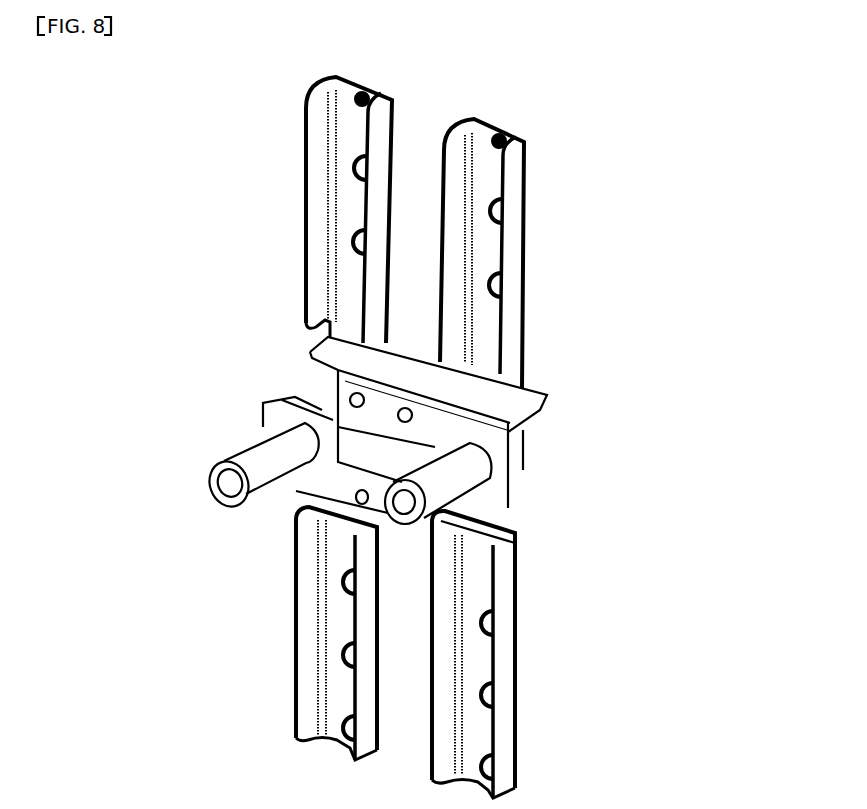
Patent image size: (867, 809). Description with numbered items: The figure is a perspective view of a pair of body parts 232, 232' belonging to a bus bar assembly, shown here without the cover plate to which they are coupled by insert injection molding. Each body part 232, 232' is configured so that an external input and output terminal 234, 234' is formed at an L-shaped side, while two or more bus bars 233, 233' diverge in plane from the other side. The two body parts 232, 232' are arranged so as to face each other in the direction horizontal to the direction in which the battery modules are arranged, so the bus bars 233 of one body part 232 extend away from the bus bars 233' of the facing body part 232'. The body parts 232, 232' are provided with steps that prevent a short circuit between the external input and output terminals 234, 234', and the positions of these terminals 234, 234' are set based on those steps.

The body part 232 is at (604, 654).
The body part 232' is at (515, 316).
The bus bar 233 is at (240, 633).
The bus bar 233' is at (249, 210).
The external input and output terminal 234 is at (175, 488).
The external input and output terminal 234' is at (536, 483).